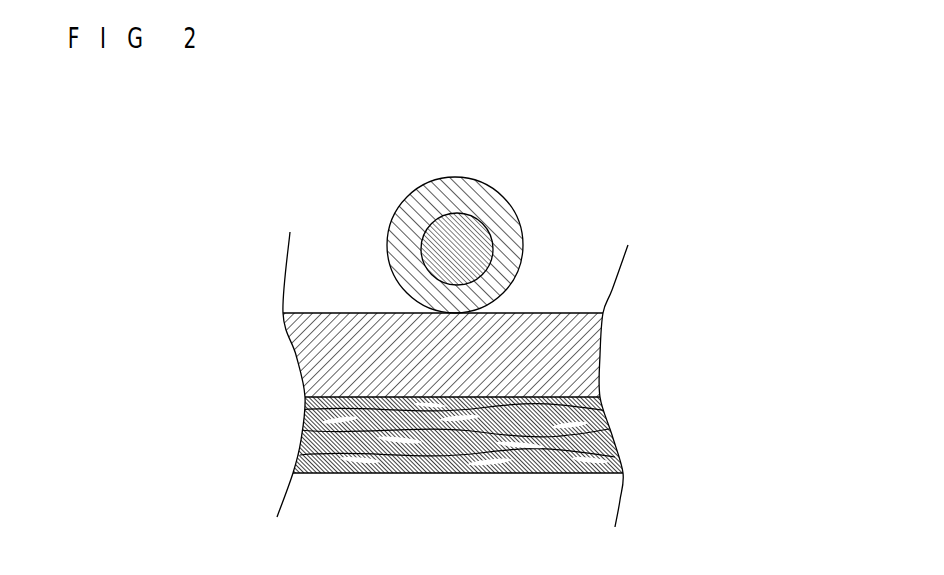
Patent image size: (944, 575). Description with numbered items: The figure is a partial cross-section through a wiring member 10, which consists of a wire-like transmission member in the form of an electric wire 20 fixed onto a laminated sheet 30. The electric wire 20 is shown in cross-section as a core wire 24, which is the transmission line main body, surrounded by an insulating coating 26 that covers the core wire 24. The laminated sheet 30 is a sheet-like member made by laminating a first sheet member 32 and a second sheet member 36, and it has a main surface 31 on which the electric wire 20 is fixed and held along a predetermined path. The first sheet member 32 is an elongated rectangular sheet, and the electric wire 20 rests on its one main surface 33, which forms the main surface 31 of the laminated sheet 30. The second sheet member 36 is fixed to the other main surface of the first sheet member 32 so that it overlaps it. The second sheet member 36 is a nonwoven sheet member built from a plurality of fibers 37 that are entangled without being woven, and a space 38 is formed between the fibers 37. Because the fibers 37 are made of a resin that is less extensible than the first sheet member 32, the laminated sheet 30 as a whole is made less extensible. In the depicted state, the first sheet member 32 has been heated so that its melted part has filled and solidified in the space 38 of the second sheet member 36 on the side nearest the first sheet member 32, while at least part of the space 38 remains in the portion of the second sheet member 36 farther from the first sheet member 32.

The wiring member 10 is at (370, 129).
The electric wire 20 is at (535, 120).
The core wire 24 is at (450, 210).
The insulating coating 26 is at (499, 185).
The laminated sheet 30 is at (569, 284).
The main surface 31 is at (385, 293).
The one main surface 33 is at (315, 310).
The first sheet member 32 is at (290, 345).
The second sheet member 36 is at (370, 474).
The fibers 37 is at (592, 370).
The space 38 is at (618, 407).